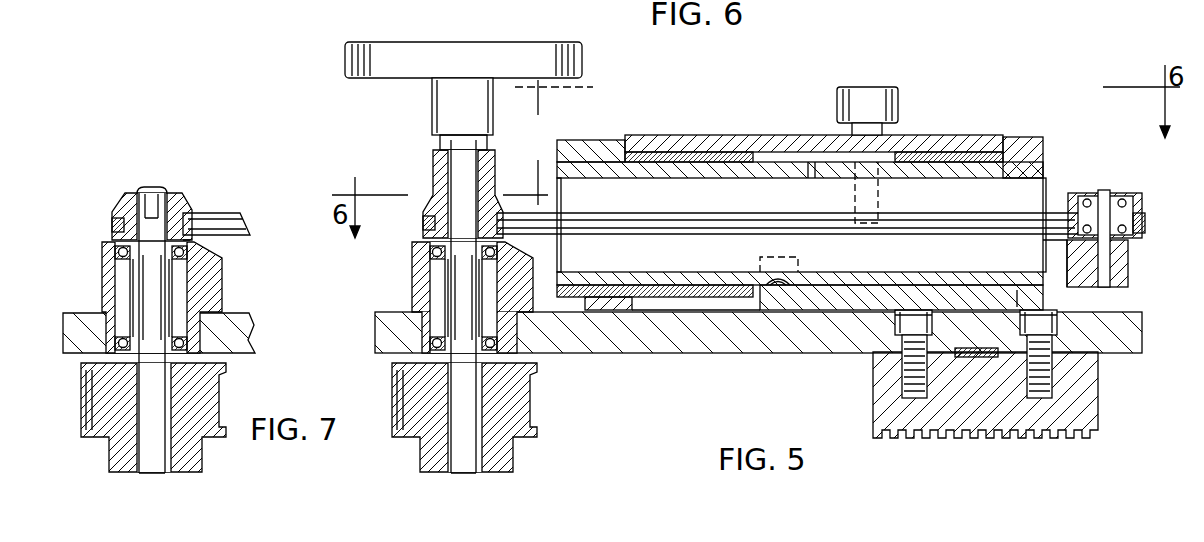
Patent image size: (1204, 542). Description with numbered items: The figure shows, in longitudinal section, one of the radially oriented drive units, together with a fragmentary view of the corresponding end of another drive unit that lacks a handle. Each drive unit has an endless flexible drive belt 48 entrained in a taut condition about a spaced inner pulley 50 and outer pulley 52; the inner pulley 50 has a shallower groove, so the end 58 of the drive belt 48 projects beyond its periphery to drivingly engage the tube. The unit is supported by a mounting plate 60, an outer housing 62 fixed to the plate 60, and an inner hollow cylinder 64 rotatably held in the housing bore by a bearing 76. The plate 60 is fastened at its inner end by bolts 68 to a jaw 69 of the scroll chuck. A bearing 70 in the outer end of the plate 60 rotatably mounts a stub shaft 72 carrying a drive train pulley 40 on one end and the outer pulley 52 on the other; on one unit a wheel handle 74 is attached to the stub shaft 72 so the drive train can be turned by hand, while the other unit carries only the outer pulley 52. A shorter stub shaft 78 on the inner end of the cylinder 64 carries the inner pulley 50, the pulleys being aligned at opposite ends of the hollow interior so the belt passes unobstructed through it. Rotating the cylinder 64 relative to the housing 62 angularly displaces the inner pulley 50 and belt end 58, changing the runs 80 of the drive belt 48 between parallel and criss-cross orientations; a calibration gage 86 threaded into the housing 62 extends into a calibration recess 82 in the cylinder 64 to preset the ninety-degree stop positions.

In FIG. 7, the pulley 40 is at (203, 450).
In FIG. 5, the pulley 40 is at (513, 450).
In FIG. 7, the drive belt 48 is at (206, 207).
In FIG. 5, the drive belt 48 is at (587, 203).
In FIG. 5, the inner pulley 50 is at (1141, 197).
In FIG. 7, the outer pulley 52 is at (128, 196).
In FIG. 5, the outer pulley 52 is at (440, 212).
In FIG. 5, the end of drive belt 58 is at (1147, 225).
In FIG. 7, the mounting plate 60 is at (64, 330).
In FIG. 5, the mounting plate 60 is at (784, 354).
In FIG. 5, the outer housing 62 is at (746, 135).
In FIG. 5, the inner hollow cylinder 64 is at (1032, 139).
In FIG. 5, the bolts 68 is at (1020, 372).
In FIG. 5, the jaw 69 is at (1098, 385).
In FIG. 5, the bearing 70 is at (691, 158).
In FIG. 7, the stub shaft 72 is at (173, 322).
In FIG. 5, the stub shaft 72 is at (490, 322).
In FIG. 5, the wheel handle 74 is at (380, 42).
In FIG. 7, the bearing 76 is at (110, 312).
In FIG. 5, the bearing 76 is at (418, 312).
In FIG. 5, the stub shaft 78 is at (1105, 191).
In FIG. 7, the runs of drive belt 80 is at (229, 214).
In FIG. 5, the runs of drive belt 80 is at (715, 236).
In FIG. 5, the calibration recess 82 is at (852, 164).
In FIG. 5, the calibration gage 86 is at (882, 80).